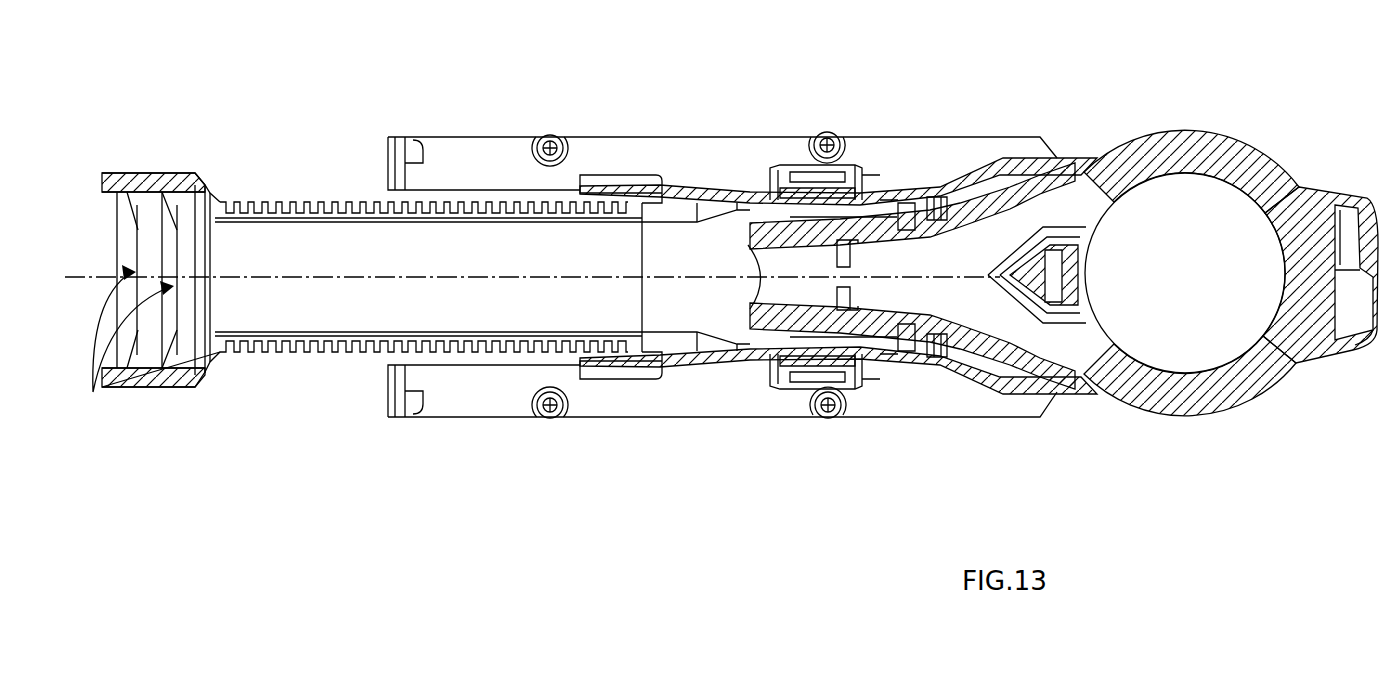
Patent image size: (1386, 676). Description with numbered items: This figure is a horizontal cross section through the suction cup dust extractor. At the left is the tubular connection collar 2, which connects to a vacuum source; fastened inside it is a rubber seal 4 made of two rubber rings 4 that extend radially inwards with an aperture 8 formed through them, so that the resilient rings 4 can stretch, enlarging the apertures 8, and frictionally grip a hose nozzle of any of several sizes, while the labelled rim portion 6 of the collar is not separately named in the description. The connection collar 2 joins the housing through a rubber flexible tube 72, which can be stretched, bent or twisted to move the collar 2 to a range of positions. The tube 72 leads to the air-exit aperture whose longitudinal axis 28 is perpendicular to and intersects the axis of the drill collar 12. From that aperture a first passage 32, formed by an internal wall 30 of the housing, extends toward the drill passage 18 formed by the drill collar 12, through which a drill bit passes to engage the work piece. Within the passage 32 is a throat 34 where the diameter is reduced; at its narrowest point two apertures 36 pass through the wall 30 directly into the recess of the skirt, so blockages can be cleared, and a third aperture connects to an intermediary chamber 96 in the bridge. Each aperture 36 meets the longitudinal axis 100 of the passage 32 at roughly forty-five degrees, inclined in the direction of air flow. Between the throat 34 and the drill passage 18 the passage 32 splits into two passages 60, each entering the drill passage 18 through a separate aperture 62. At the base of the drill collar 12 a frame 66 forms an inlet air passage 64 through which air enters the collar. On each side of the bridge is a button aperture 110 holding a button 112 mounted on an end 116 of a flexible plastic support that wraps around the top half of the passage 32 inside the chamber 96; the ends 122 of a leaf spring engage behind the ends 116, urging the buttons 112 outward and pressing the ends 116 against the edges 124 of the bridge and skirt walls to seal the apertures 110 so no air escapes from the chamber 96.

The connection collar 2 is at (165, 173).
The rubber seal 4 is at (118, 222).
The nut rim 6 is at (112, 175).
The aperture 8 is at (127, 342).
The drill collar 12 is at (1207, 160).
The drill passage 18 is at (1209, 258).
The longitudinal axis 28 is at (296, 272).
The internal wall 30 is at (762, 265).
The first passage 32 is at (690, 270).
The throat 34 is at (850, 292).
The apertures 36 is at (923, 187).
The passages 60 is at (1070, 203).
The aperture 62 is at (1105, 221).
The inlet air passage 64 is at (1355, 217).
The frame 66 is at (1377, 340).
The flexible tube 72 is at (300, 202).
The intermediary chamber 96 is at (740, 203).
The longitudinal axis 100 is at (910, 377).
The button aperture 110 is at (758, 183).
The button 112 is at (793, 177).
The end 116 is at (863, 173).
The ends 122 is at (810, 187).
The edges 124 is at (752, 212).